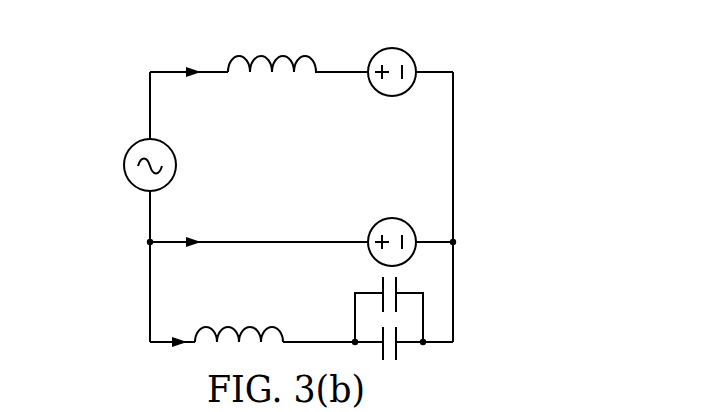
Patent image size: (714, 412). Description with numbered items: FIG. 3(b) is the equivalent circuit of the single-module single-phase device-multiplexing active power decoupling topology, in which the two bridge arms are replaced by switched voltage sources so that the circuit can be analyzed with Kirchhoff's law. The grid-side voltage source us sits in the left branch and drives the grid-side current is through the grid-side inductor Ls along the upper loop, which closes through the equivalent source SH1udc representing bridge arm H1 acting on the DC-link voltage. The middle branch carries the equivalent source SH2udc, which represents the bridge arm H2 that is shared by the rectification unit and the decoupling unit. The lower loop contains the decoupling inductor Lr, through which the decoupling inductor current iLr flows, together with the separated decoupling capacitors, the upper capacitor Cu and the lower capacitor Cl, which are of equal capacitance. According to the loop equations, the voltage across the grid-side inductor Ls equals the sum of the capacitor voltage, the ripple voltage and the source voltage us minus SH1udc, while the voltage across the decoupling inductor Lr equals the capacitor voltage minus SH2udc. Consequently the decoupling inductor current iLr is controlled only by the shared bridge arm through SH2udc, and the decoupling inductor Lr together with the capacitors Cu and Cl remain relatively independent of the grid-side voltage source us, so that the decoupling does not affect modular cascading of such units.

The grid-side voltage source us is at (136, 165).
The grid-side inductor current is is at (188, 91).
The grid-side inductor Ls is at (272, 52).
The bridge arm H1 equivalent voltage source SH1udc is at (393, 60).
The bridge arm H2 equivalent voltage source SH2udc is at (396, 230).
The decoupling inductor current iLr is at (175, 328).
The decoupling inductor Lr is at (239, 320).
The upper decoupling capacitor Cu is at (389, 308).
The lower decoupling capacitor Cl is at (379, 341).